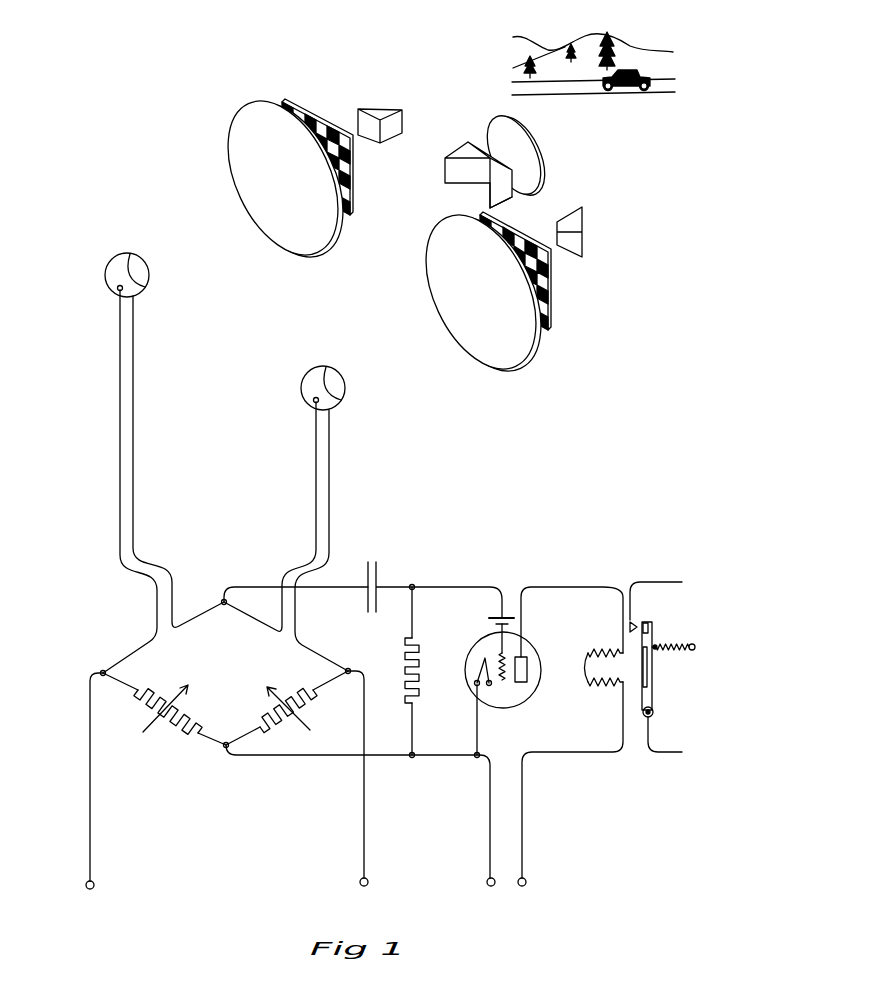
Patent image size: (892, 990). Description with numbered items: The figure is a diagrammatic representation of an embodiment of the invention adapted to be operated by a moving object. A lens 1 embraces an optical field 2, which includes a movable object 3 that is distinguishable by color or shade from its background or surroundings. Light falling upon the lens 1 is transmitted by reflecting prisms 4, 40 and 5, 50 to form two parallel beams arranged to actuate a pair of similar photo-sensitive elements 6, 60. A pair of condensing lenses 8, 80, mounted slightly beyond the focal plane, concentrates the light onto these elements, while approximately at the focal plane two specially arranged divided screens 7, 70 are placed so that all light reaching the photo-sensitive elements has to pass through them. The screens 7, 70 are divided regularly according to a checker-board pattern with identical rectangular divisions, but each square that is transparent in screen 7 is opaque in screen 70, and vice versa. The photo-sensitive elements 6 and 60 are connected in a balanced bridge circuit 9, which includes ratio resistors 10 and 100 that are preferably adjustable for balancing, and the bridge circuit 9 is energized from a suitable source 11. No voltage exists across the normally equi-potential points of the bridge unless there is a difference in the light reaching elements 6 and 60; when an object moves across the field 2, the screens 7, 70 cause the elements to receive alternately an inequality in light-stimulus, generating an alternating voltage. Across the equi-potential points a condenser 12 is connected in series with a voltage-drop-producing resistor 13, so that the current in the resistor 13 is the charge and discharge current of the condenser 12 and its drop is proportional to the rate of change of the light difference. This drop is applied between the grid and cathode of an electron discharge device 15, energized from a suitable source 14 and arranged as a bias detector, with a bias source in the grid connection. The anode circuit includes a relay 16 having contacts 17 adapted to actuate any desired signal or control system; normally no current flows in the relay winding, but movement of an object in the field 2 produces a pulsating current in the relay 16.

The lens 1 is at (518, 156).
The optical field 2 is at (593, 44).
The movable object 3 is at (593, 98).
The reflecting prism 4 is at (470, 175).
The reflecting prism 5 is at (387, 126).
The photo-sensitive element 6 is at (154, 463).
The divided screen 7 is at (322, 157).
The condensing lens 8 is at (286, 179).
The bridge circuit 9 is at (296, 732).
The ratio resistor 10 is at (164, 709).
The source 11 is at (227, 782).
The condenser 12 is at (435, 589).
The resistor 13 is at (401, 671).
The source 14 is at (555, 787).
The electron discharge device 15 is at (530, 672).
The relay 16 is at (640, 687).
The contacts 17 is at (656, 607).
The reflecting prism 40 is at (505, 201).
The reflecting prism 50 is at (581, 232).
The photo-sensitive element 60 is at (286, 518).
The divided screen 70 is at (527, 271).
The condensing lens 80 is at (484, 293).
The ratio resistor 100 is at (213, 683).